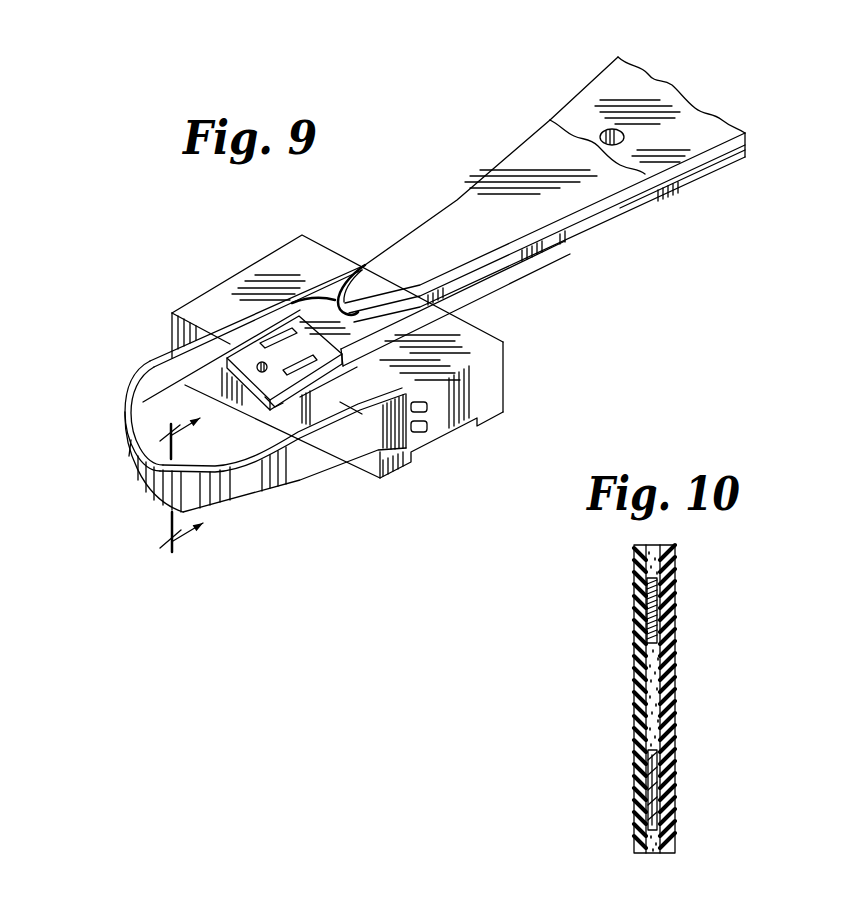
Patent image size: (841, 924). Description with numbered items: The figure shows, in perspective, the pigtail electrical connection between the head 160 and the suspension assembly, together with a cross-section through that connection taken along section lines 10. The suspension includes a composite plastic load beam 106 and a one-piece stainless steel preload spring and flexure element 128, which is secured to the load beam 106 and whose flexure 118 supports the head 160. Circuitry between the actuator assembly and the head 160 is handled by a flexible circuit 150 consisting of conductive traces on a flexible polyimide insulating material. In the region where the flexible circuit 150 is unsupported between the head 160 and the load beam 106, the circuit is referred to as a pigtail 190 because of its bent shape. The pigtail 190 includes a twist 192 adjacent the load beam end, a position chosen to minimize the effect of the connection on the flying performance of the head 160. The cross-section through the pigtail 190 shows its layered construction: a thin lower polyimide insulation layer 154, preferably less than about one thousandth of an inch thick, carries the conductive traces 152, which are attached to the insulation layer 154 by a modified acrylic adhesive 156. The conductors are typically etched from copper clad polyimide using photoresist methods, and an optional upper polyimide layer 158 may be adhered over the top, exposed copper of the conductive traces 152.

In FIG. 9, the load beam 106 is at (582, 92).
In FIG. 9, the flexible circuit 150 is at (503, 157).
In FIG. 9, the preload spring and flexure element 128 is at (680, 195).
In FIG. 9, the twist 192 is at (327, 313).
In FIG. 9, the head 160 is at (506, 385).
In FIG. 9, the flexure 118 is at (246, 358).
In FIG. 9, the pigtail 190 is at (130, 388).
In FIG. 10, the pigtail 190 is at (634, 830).
In FIG. 9, the section lines 10— 10 is at (196, 478).
In FIG. 10, the conductive traces 152 is at (675, 603).
In FIG. 10, the polyimide insulation layer 154 is at (634, 576).
In FIG. 10, the acrylic adhesive 156 is at (647, 686).
In FIG. 10, the upper polyimide layer 158 is at (676, 693).